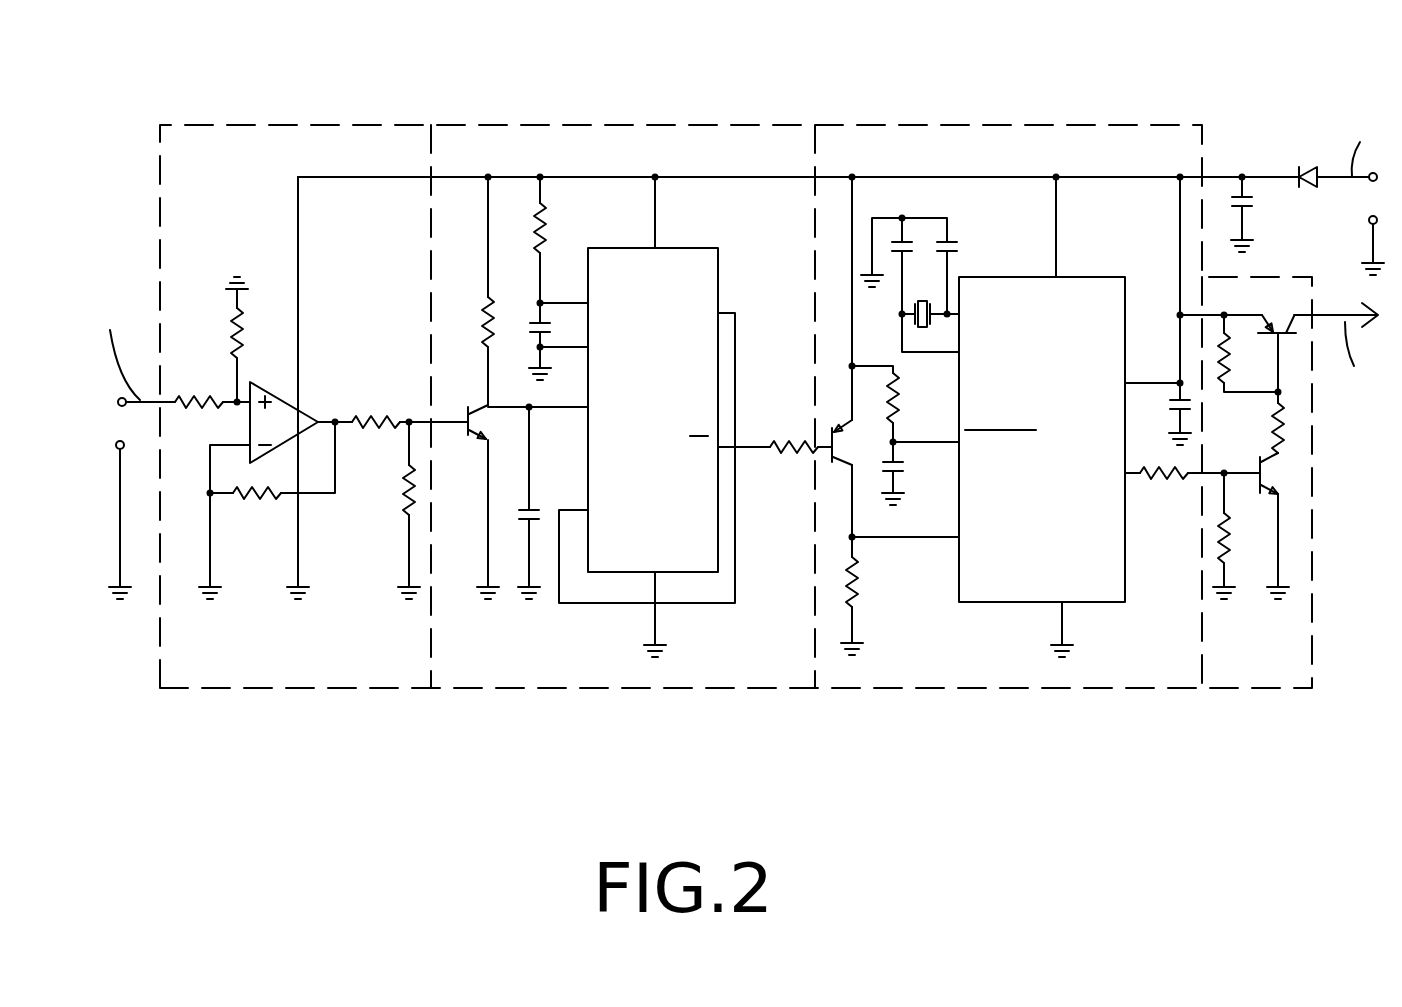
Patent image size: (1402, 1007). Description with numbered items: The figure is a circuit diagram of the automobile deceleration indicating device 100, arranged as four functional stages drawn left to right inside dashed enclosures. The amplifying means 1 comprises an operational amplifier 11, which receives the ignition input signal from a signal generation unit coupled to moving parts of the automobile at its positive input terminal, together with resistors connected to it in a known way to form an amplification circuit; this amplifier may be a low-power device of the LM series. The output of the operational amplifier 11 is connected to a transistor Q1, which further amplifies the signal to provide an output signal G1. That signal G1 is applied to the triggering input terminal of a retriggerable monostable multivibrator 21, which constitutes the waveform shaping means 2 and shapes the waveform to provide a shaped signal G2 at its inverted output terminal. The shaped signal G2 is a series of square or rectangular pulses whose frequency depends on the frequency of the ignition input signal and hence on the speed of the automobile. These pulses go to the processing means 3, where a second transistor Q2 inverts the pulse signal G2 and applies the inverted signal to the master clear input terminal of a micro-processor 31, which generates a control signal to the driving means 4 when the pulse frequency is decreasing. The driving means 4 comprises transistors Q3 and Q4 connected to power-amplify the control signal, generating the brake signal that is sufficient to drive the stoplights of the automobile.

The automobile deceleration indicating device 100 is at (841, 83).
The amplifying means 1 is at (320, 688).
The waveform shaping means 2 is at (573, 688).
The processing means 3 is at (977, 688).
The driving means 4 is at (1272, 688).
The operational amplifier 11 is at (300, 415).
The retriggerable monostable multivibrator 21 is at (698, 262).
The micro-processor 31 is at (993, 277).
The transistor Q1 is at (478, 438).
The second transistor Q2 is at (834, 434).
The transistor Q3 is at (1276, 490).
The transistor Q4 is at (1270, 328).
The output signal G1 is at (567, 408).
The shaped signal G2 is at (745, 452).